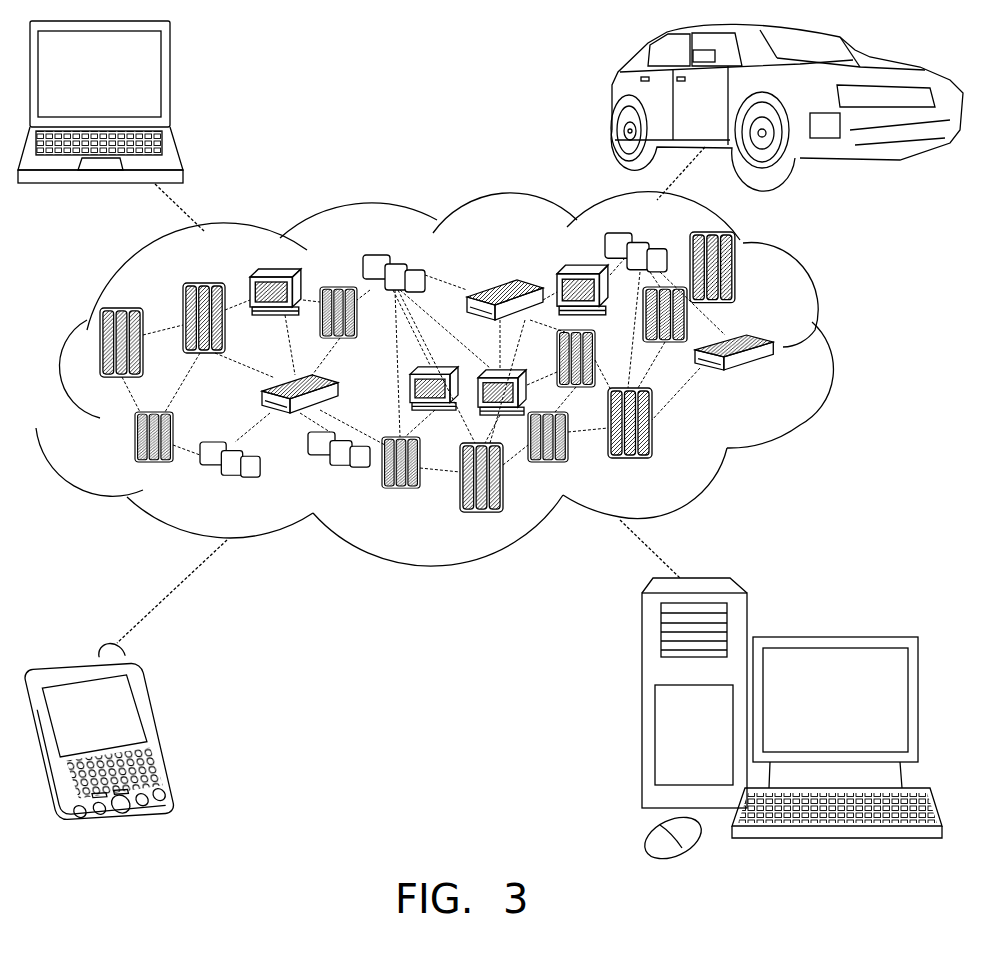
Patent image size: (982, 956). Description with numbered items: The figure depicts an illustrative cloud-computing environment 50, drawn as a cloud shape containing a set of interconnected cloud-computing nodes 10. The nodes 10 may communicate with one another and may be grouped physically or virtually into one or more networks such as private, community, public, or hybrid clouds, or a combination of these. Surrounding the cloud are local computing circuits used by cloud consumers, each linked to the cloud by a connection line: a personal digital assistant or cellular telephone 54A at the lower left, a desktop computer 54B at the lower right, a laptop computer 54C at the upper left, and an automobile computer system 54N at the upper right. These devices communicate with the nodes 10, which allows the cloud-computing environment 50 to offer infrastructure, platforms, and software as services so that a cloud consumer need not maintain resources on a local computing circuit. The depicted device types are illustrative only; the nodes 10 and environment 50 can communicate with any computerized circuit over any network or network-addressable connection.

The cloud-computing node 10 is at (776, 383).
The cloud-computing environment 50 is at (838, 353).
The personal digital assistant or cellular telephone 54A is at (165, 722).
The desktop computer 54B is at (830, 635).
The laptop computer 54C is at (170, 80).
The automobile computer system 54N is at (612, 100).